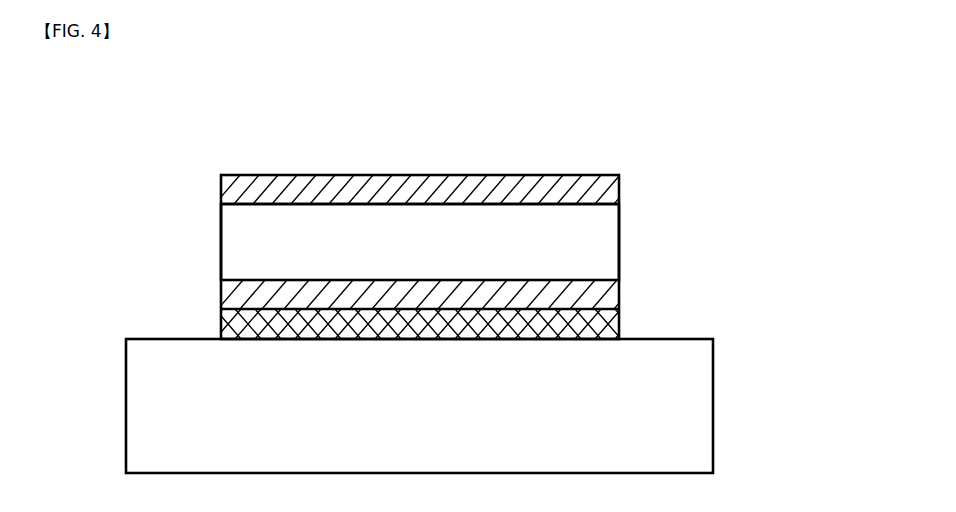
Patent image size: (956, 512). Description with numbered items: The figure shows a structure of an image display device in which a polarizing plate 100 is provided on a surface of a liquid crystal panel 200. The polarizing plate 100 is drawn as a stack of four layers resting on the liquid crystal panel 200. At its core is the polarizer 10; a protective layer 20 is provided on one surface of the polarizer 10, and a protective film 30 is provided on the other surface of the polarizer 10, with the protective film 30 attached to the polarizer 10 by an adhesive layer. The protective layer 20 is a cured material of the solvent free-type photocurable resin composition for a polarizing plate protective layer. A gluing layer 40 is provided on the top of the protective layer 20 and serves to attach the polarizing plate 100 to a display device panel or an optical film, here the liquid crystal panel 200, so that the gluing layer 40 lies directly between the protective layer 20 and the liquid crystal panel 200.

The polarizer 10 is at (610, 237).
The protective layer 20 is at (610, 297).
The protective film 30 is at (619, 178).
The gluing layer 40 is at (620, 327).
The polarizing plate 100 is at (808, 140).
The liquid crystal panel 200 is at (703, 415).